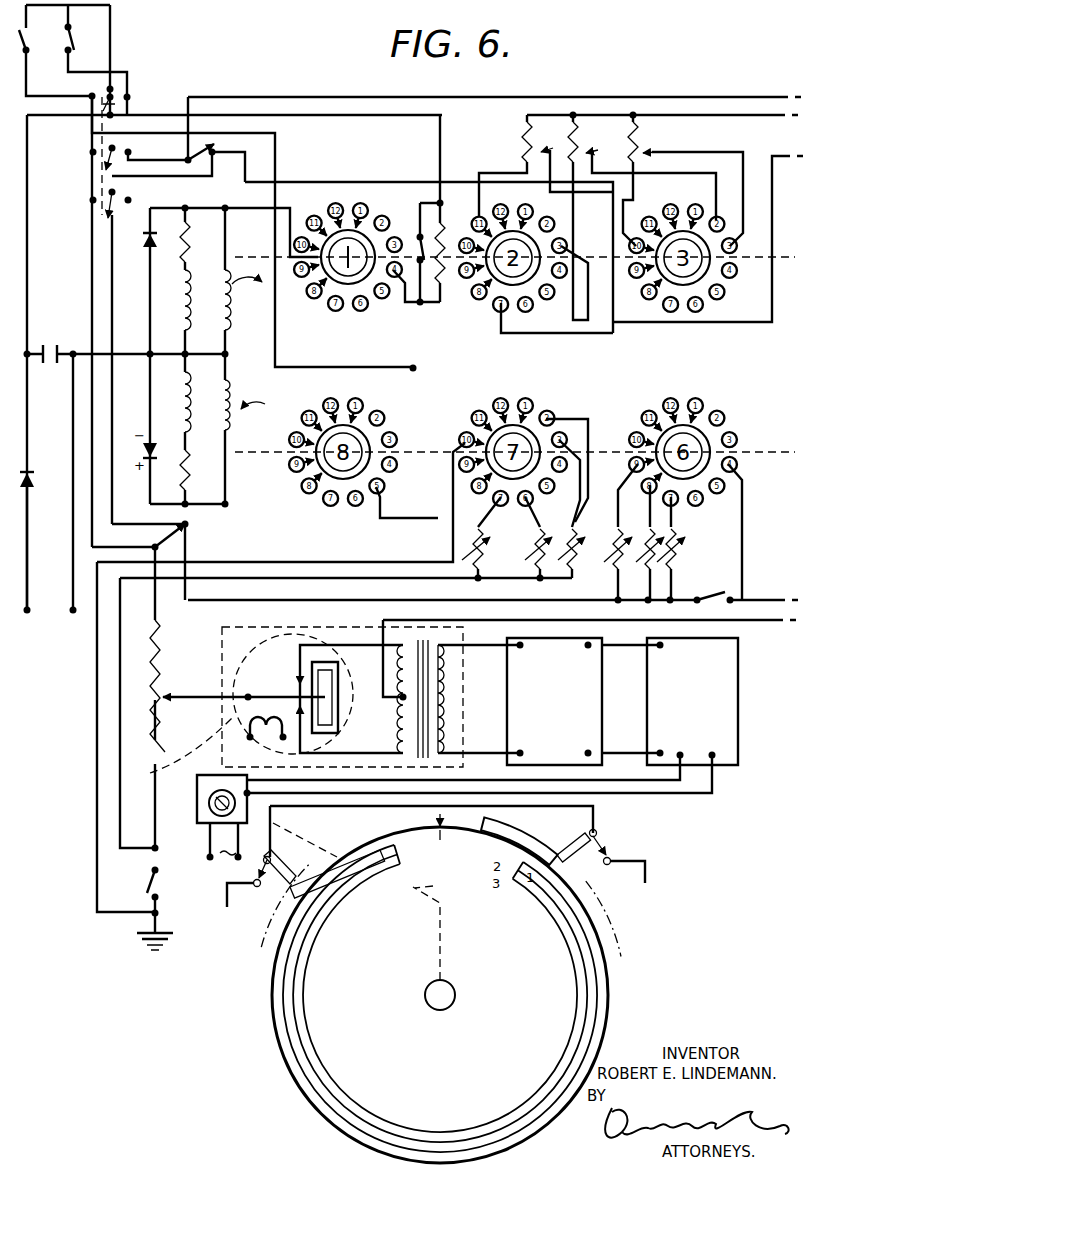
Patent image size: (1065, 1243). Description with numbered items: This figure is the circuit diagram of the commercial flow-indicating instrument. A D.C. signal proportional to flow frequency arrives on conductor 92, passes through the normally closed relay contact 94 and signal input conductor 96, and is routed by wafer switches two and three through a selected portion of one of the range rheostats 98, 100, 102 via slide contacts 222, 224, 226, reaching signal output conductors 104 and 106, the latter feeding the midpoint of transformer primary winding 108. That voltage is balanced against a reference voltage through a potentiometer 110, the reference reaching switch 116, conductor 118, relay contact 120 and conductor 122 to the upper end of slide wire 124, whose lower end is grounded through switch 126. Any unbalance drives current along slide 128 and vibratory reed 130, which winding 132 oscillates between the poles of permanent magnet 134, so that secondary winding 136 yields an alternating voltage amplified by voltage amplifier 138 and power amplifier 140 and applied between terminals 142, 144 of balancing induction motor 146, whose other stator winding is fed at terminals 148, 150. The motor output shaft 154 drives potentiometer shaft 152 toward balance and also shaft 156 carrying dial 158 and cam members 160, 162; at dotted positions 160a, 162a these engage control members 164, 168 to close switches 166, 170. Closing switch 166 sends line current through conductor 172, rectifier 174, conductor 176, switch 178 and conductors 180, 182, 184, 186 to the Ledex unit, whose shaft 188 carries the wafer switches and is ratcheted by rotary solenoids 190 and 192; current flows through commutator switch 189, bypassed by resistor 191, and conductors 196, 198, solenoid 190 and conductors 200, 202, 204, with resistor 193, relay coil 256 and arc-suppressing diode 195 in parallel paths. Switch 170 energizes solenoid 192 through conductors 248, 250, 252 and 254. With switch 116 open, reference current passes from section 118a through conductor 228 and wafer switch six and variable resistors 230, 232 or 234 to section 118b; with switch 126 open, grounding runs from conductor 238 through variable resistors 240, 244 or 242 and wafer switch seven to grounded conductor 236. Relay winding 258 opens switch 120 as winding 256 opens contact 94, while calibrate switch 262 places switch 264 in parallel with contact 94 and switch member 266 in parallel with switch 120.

The conductor 92 is at (290, 96).
The relay contact 94 is at (192, 158).
The signal input conductor 96 is at (362, 176).
The range resistor 98 is at (518, 143).
The range resistor 100 is at (579, 139).
The range resistor 102 is at (641, 138).
The signal output conductor 104 is at (778, 116).
The signal output conductor 106 is at (784, 156).
The transformer primary winding 108 is at (430, 645).
The potentiometer 110 is at (162, 685).
The switch 116 is at (705, 596).
The conductor 118 is at (248, 604).
The conductor section 118a is at (775, 600).
The conductor section 118b is at (374, 590).
The relay contact 120 is at (183, 540).
The conductor 122 is at (90, 268).
The slide wire 124 is at (157, 738).
The switch 126 is at (153, 878).
The slide 128 is at (207, 701).
The vibratory reed 130 is at (285, 692).
The winding 132 is at (262, 740).
The permanent magnet 134 is at (346, 724).
The secondary transformer winding 136 is at (448, 720).
The voltage amplifier 138 is at (604, 724).
The power amplifier 140 is at (742, 722).
The terminal 142 is at (196, 798).
The terminal 144 is at (272, 816).
The balancing induction motor 146 is at (194, 816).
The terminal 148 is at (208, 829).
The terminal 150 is at (210, 852).
The potentiometer shaft 152 is at (152, 773).
The output shaft 154 is at (440, 882).
The shaft 156 is at (445, 951).
The dial 158 is at (288, 1060).
The switch closing cam member 160 is at (532, 845).
The dotted line position 160a is at (612, 914).
The switch closing cam member 162 is at (345, 851).
The dotted line position 162a is at (260, 936).
The control member 164 is at (596, 831).
The switch 166 is at (75, 42).
The control member 168 is at (280, 862).
The switch 170 is at (255, 876).
The conductor 172 is at (28, 530).
The rectifier 174 is at (38, 489).
The conductor 176 is at (66, 115).
The switch 178 is at (118, 106).
The conductor 180 is at (112, 16).
The conductor 182 is at (70, 13).
The conductor 184 is at (120, 72).
The conductor 186 is at (318, 118).
The shaft 188 is at (268, 256).
The commutator switch 189 is at (418, 240).
The rotary solenoid 190 is at (260, 298).
The resistor 191 is at (444, 222).
The rotary solenoid 192 is at (238, 398).
The resistor 193 is at (200, 239).
The diode 195 is at (160, 250).
The conductor 196 is at (268, 206).
The conductor 198 is at (228, 228).
The conductor 200 is at (230, 340).
The conductor 202 is at (128, 353).
The conductor 204 is at (73, 574).
The slide contact 222 is at (575, 158).
The slide contact 224 is at (651, 178).
The slide contact 226 is at (676, 154).
The conductor 228 is at (745, 542).
The variable resistor 230 is at (677, 545).
The variable resistor 232 is at (660, 562).
The variable resistor 234 is at (610, 564).
The grounded conductor 236 is at (272, 562).
The conductor 238 is at (380, 576).
The variable resistor 240 is at (480, 536).
The variable resistor 242 is at (66, 90).
The variable resistor 244 is at (574, 528).
The conductor 248 is at (278, 170).
The conductor 250 is at (228, 508).
The conductor 252 is at (228, 466).
The conductor 254 is at (230, 364).
The relay winding 256 is at (180, 300).
The relay winding 258 is at (180, 415).
The calibrate switch 262 is at (100, 185).
The switch 264 is at (100, 160).
The switch member 266 is at (100, 208).